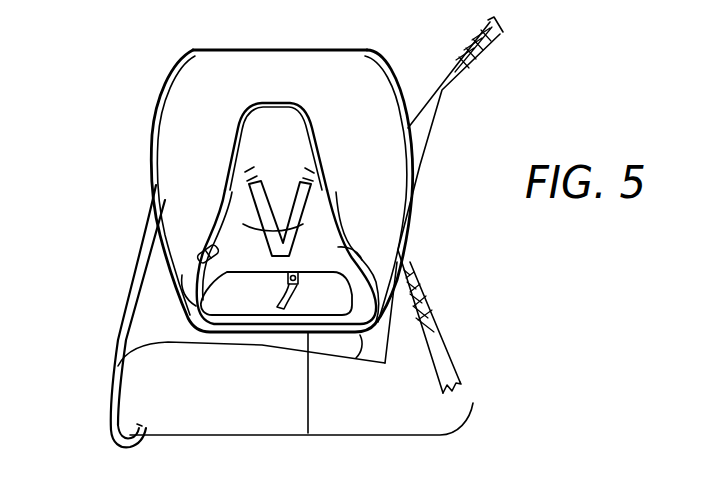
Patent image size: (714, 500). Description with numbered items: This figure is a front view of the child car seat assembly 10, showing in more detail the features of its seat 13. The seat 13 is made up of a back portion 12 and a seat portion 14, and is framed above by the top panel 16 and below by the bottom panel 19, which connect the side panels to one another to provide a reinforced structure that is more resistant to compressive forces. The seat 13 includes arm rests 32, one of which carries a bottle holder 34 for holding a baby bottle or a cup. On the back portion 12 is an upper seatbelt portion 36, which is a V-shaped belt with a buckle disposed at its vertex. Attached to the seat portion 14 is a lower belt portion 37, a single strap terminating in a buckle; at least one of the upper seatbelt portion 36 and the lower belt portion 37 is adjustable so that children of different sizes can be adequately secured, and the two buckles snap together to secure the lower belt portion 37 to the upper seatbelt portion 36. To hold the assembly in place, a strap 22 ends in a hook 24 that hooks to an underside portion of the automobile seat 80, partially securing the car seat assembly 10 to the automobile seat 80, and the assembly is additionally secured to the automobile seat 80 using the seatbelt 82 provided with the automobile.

The child car seat assembly 10 is at (183, 53).
The back portion 12 is at (317, 234).
The seat 13 is at (232, 222).
The seat portion 14 is at (323, 303).
The top panel 16 is at (258, 50).
The bottom panel 19 is at (308, 433).
The strap 22 is at (112, 363).
The hook 24 is at (130, 440).
The arm rests 32 is at (182, 275).
The bottle holder 34 is at (205, 252).
The upper seatbelt portion 36 is at (306, 200).
The lower belt portion 37 is at (302, 292).
The automobile seat 80 is at (442, 87).
The seatbelt 82 is at (448, 64).